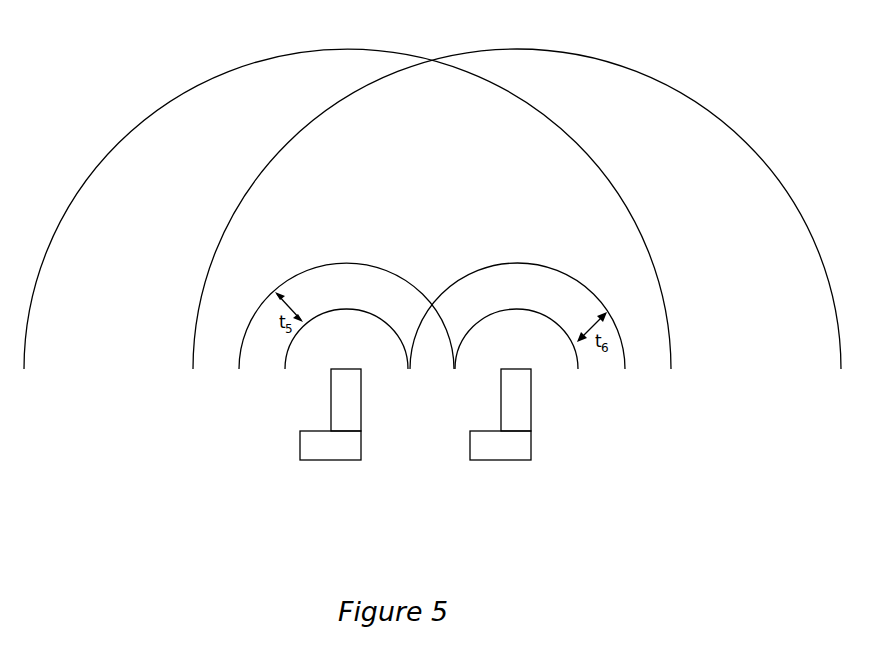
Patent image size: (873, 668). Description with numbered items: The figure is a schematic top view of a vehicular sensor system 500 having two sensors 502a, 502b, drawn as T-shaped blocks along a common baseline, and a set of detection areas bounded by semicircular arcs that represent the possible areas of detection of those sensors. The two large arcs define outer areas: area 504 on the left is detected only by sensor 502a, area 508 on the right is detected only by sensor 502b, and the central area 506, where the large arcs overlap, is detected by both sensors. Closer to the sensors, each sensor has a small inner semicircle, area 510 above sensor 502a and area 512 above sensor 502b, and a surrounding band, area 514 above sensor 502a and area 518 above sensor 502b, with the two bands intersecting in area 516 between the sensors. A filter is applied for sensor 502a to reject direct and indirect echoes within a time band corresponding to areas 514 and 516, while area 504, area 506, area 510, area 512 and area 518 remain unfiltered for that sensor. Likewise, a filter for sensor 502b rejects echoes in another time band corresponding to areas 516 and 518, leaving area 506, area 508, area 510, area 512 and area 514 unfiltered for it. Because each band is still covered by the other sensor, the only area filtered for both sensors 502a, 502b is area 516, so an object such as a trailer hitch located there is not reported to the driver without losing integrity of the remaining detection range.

The vehicular sensor system 500 is at (208, 455).
The sensor 502a is at (332, 460).
The sensor 502b is at (501, 460).
The detection area 504 is at (163, 225).
The detection area 506 is at (446, 225).
The detection area 508 is at (734, 240).
The detection area 510 is at (363, 351).
The detection area 512 is at (532, 351).
The detection area 514 is at (363, 302).
The detection area 516 is at (449, 363).
The detection area 518 is at (532, 302).